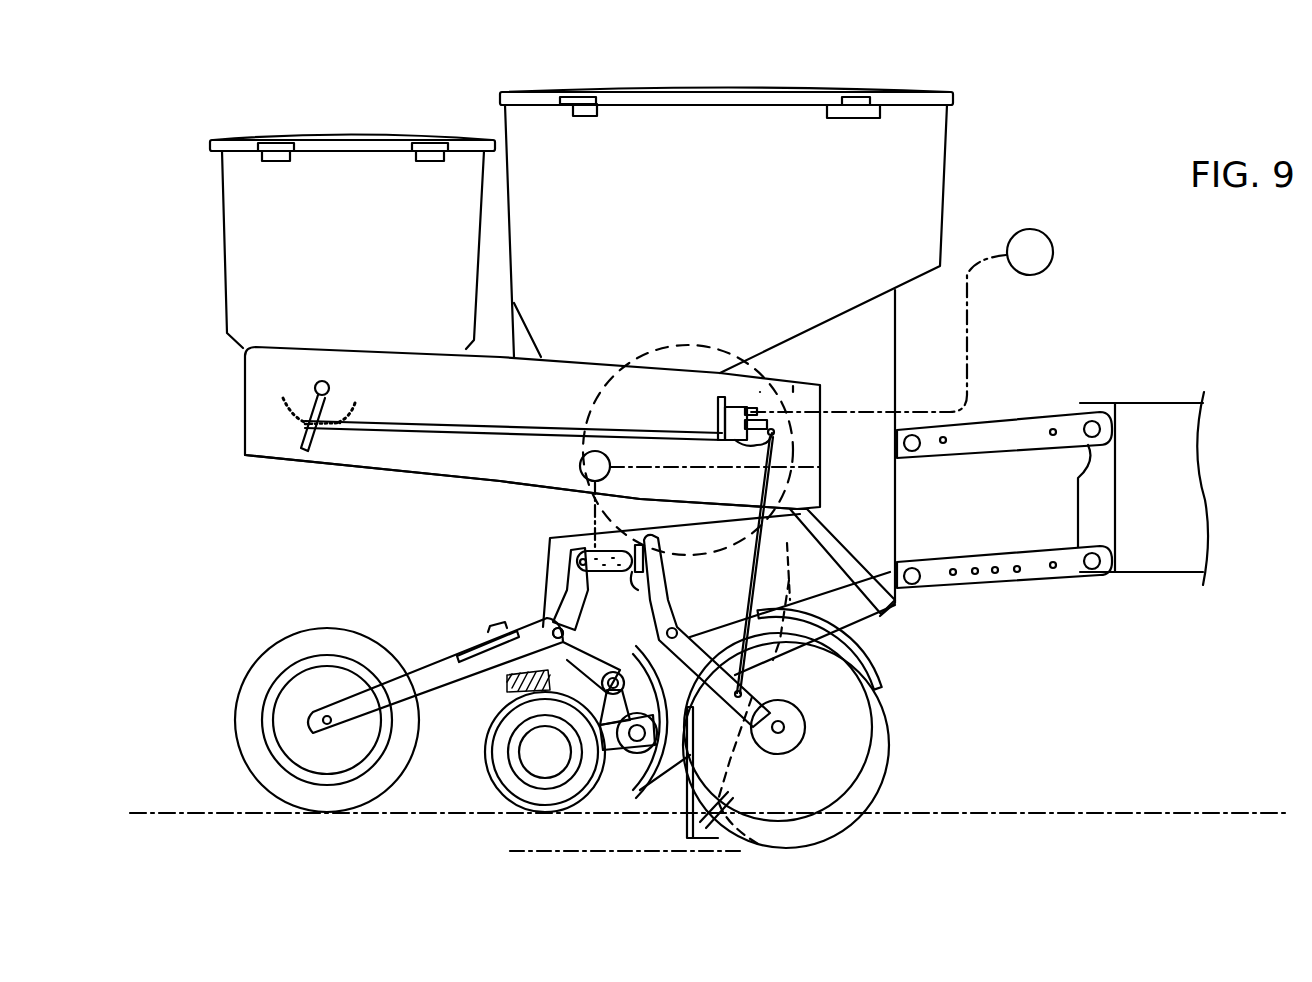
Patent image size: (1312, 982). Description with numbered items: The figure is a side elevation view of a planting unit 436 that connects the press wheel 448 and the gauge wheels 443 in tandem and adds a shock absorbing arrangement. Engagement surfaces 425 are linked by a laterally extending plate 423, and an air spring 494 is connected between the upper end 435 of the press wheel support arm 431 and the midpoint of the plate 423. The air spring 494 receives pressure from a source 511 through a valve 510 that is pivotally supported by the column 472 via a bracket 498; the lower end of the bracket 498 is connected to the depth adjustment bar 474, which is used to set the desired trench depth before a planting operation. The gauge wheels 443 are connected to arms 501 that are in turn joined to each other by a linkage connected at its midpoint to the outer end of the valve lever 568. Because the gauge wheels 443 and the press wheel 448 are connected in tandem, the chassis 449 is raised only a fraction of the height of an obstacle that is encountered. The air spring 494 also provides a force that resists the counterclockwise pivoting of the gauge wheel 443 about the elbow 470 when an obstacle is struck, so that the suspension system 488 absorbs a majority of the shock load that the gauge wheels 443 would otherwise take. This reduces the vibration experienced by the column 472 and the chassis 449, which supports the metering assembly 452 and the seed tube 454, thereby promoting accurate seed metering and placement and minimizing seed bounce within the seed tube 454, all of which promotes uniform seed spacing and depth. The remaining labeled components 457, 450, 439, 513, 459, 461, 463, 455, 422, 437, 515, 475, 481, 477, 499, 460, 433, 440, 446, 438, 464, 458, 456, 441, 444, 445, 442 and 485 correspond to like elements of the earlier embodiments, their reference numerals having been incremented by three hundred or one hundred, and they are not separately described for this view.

The planting unit 436 is at (986, 47).
The insecticide hopper 457 is at (358, 234).
The seed hopper 450 is at (720, 208).
The metering assembly 452 is at (700, 335).
The valve 510 is at (760, 393).
The frame member 439 is at (895, 362).
The source 511 is at (1048, 232).
The air line 513 is at (968, 320).
The parallel linkage 459 is at (1080, 370).
The upper link 461 is at (996, 420).
The lower link 463 is at (998, 588).
The mounting bracket 455 is at (1107, 512).
The toolbar 422 is at (1163, 402).
The depth adjustment bar 474 is at (486, 436).
The column 472 is at (490, 487).
The row unit frame 437 is at (433, 480).
The bracket 515 is at (822, 452).
The adjustment rod 475 is at (300, 430).
The lever handle 481 is at (332, 384).
The lever 477 is at (285, 394).
The pivot 499 is at (556, 442).
The bracket 498 is at (718, 410).
The valve lever 568 is at (740, 445).
The seed tube 454 is at (671, 570).
The arms 501 is at (748, 548).
The upper end of press wheel support arm 435 is at (560, 596).
The chassis 449 is at (575, 562).
The suspension system 488 is at (573, 542).
The air spring 494 is at (606, 548).
The engagement surfaces 425 is at (650, 551).
The laterally extending plate 423 is at (634, 591).
The arm 460 is at (672, 606).
The elbow 470 is at (678, 630).
The press wheel support arm 431 is at (436, 700).
The arm 433 is at (432, 667).
The hub 440 is at (665, 780).
The gauge wheel 446 is at (490, 786).
The press wheel 448 is at (385, 800).
The press wheel assembly 438 is at (840, 740).
The gauge wheels 443 is at (890, 738).
The wheel hub 464 is at (792, 716).
The shield 458 is at (850, 656).
The rod 456 is at (724, 707).
The disc opener 441 is at (830, 825).
The bracket 444 is at (712, 855).
The furrow line 445 is at (648, 856).
The opener 442 is at (762, 856).
The ground line 485 is at (968, 814).